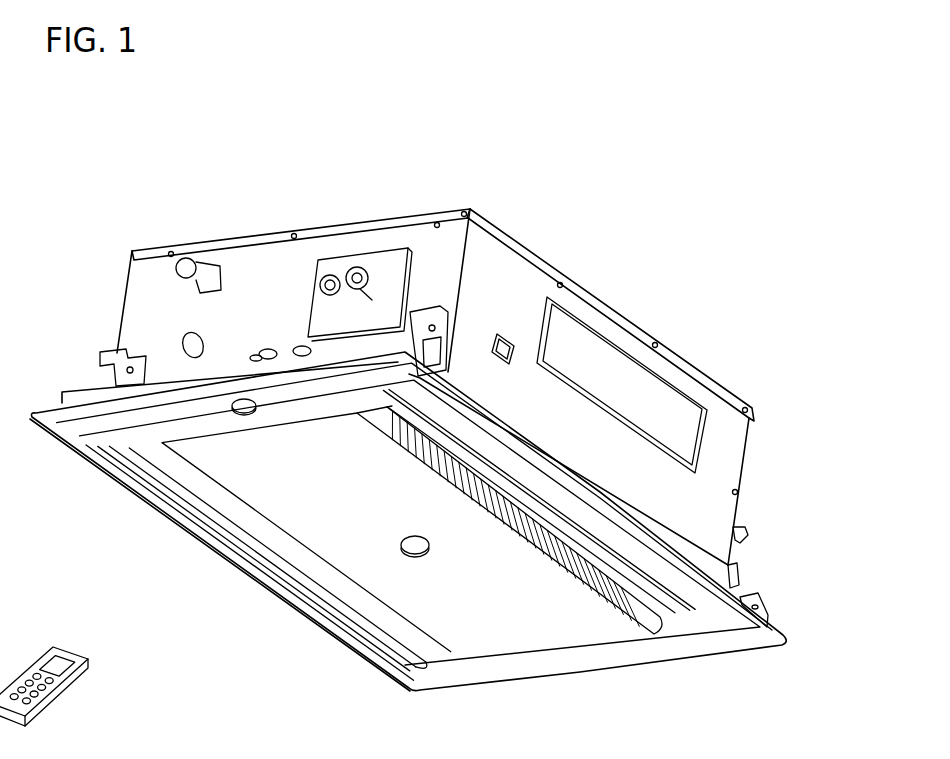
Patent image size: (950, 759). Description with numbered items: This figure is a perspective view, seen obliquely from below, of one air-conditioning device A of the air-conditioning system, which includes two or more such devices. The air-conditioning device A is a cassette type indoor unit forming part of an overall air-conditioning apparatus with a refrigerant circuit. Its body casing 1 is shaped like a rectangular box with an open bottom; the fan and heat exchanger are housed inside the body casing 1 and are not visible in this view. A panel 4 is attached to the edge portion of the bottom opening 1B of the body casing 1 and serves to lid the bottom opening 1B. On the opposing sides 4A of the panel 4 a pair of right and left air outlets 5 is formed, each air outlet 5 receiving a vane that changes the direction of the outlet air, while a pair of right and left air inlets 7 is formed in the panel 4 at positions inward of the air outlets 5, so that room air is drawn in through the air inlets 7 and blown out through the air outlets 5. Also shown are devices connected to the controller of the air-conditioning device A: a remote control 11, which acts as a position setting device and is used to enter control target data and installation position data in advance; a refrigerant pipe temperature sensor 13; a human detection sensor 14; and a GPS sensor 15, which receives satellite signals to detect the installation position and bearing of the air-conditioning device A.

The air-conditioning device A is at (614, 244).
The body casing 1 is at (755, 434).
The bottom opening 1B is at (549, 605).
The panel 4 is at (265, 460).
The opposing sides of the panel 4A is at (250, 562).
The air outlet 5 is at (290, 588).
The air inlet 7 is at (375, 605).
The remote control 11 is at (29, 648).
The refrigerant pipe temperature sensor 13 is at (328, 279).
The human detection sensor 14 is at (418, 553).
The GPS sensor 15 is at (67, 442).